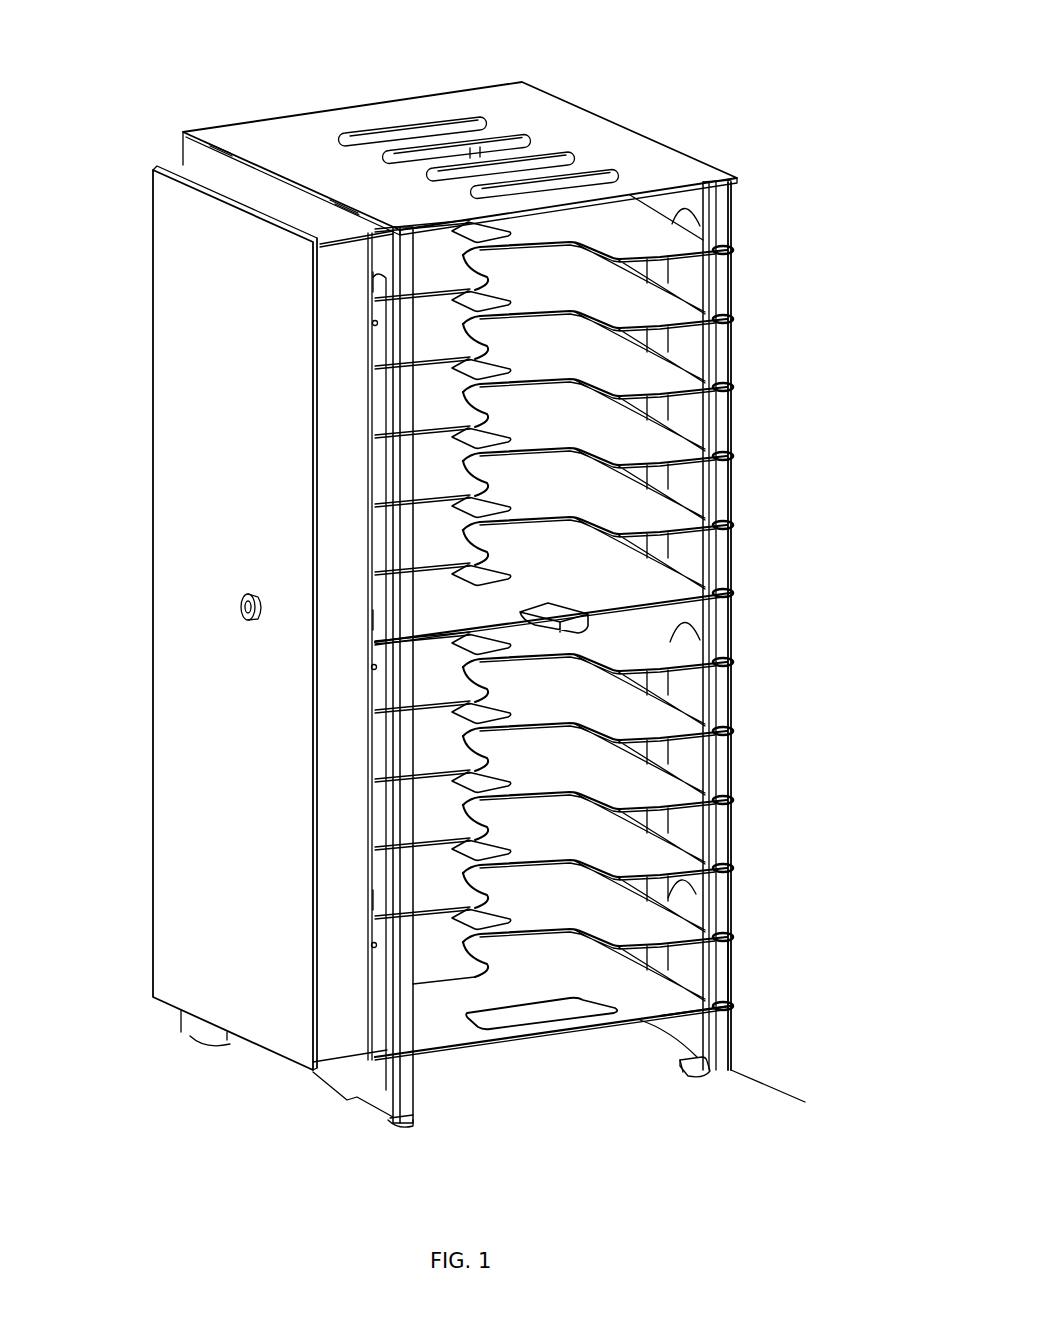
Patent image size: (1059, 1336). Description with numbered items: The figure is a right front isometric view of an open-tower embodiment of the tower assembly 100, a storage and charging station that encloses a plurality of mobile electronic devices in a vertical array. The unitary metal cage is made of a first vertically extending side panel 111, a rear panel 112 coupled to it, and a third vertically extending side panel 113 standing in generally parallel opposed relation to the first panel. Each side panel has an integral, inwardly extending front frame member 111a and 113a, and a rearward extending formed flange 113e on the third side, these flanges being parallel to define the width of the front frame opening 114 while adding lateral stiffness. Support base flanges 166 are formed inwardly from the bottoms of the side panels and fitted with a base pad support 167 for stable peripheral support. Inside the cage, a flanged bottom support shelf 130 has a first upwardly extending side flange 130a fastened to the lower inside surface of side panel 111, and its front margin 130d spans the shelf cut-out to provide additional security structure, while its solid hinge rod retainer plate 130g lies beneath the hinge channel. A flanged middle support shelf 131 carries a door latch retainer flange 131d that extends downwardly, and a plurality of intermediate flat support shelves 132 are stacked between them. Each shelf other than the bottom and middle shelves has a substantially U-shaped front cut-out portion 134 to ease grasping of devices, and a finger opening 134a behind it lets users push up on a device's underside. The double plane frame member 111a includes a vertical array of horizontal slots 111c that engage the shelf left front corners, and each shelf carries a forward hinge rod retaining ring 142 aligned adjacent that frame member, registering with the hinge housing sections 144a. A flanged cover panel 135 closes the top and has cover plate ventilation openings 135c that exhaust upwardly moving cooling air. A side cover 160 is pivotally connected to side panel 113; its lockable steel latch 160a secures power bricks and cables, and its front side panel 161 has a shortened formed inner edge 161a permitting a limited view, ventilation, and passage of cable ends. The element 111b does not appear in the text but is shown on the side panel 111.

The tower assembly 100 is at (697, 75).
The first vertically extending side panel 111 is at (735, 360).
The front frame member 111a is at (735, 1072).
The side panel cutout 111b is at (703, 880).
The horizontal slots 111c is at (707, 795).
The second vertically extending rear panel 112 is at (355, 140).
The third vertically extending side panel 113 is at (335, 1088).
The front frame member 113a is at (402, 1120).
The rearward extending formed flange 113e is at (418, 1012).
The front frame opening 114 is at (710, 212).
The bottom support shelf 130 is at (637, 1020).
The first upwardly extending side flange 130a is at (720, 938).
The front margin 130d is at (525, 1037).
The hinge rod retainer plate 130g is at (730, 1007).
The middle support shelf 131 is at (563, 571).
The door latch retainer flange 131d is at (580, 628).
The intermediate flat support shelves 132 is at (686, 256).
The U-shaped front cut-out portion 134 is at (475, 690).
The finger opening 134a is at (500, 782).
The cover panel 135 is at (462, 90).
The cover plate ventilation openings 135c is at (492, 124).
The hinge rod retaining ring 142 is at (735, 727).
The hinge housing sections 144a is at (735, 978).
The side cover 160 is at (160, 600).
The lockable steel latch 160a is at (246, 620).
The front side panel 161 is at (335, 866).
The shortened formed inner edge 161a is at (398, 816).
The support base flanges 166 is at (684, 1075).
The base pad support 167 is at (388, 1125).